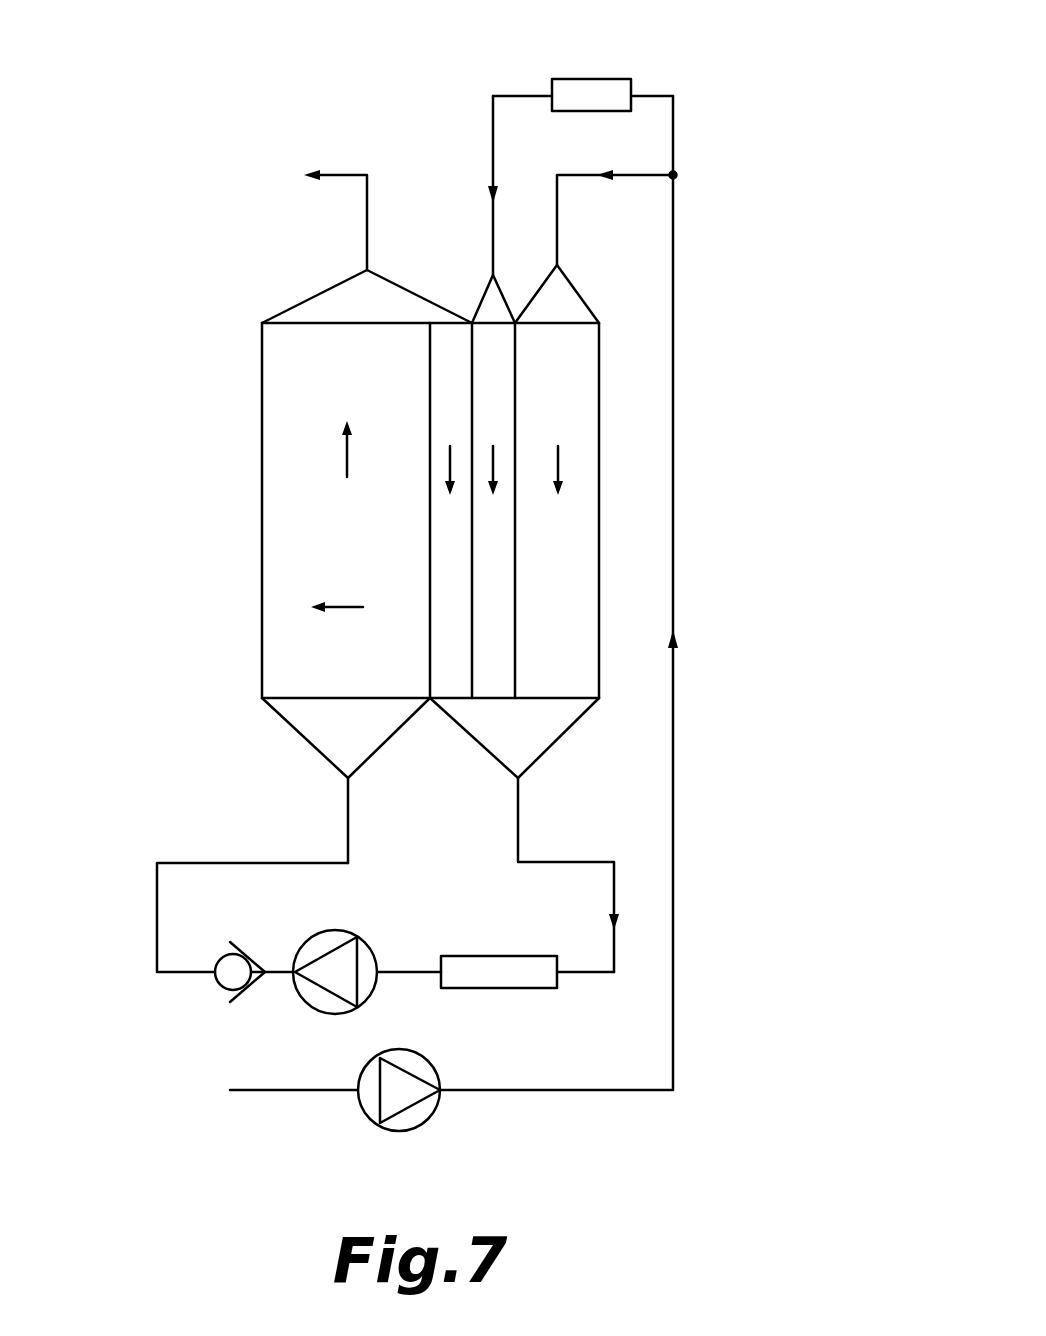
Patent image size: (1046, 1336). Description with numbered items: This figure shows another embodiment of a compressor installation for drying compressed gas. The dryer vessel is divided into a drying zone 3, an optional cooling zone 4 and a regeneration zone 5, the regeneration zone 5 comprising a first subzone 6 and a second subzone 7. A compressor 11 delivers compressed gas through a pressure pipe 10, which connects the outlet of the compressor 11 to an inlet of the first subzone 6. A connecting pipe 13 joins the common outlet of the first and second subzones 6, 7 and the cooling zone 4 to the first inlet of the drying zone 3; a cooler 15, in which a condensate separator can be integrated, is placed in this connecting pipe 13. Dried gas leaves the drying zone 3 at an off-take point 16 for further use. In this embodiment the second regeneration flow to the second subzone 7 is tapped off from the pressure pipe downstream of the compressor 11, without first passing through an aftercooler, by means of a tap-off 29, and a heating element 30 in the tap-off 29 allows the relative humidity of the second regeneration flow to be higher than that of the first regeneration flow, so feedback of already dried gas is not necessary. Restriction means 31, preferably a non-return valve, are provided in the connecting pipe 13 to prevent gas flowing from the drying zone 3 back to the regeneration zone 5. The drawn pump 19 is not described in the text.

The drying zone 3 is at (302, 538).
The cooling zone 4 is at (450, 538).
The regeneration zone 5 is at (548, 715).
The first subzone 6 is at (585, 371).
The second subzone 7 is at (495, 604).
The pressure pipe 10 is at (673, 1027).
The compressor 11 is at (430, 1120).
The connecting pipe 13 is at (614, 972).
The cooler 15 is at (557, 988).
The off-take point 16 is at (365, 270).
The circulation pump 19 is at (300, 1000).
The tap-off 29 is at (673, 135).
The heating element 30 is at (599, 86).
The restriction means 31 is at (168, 1008).